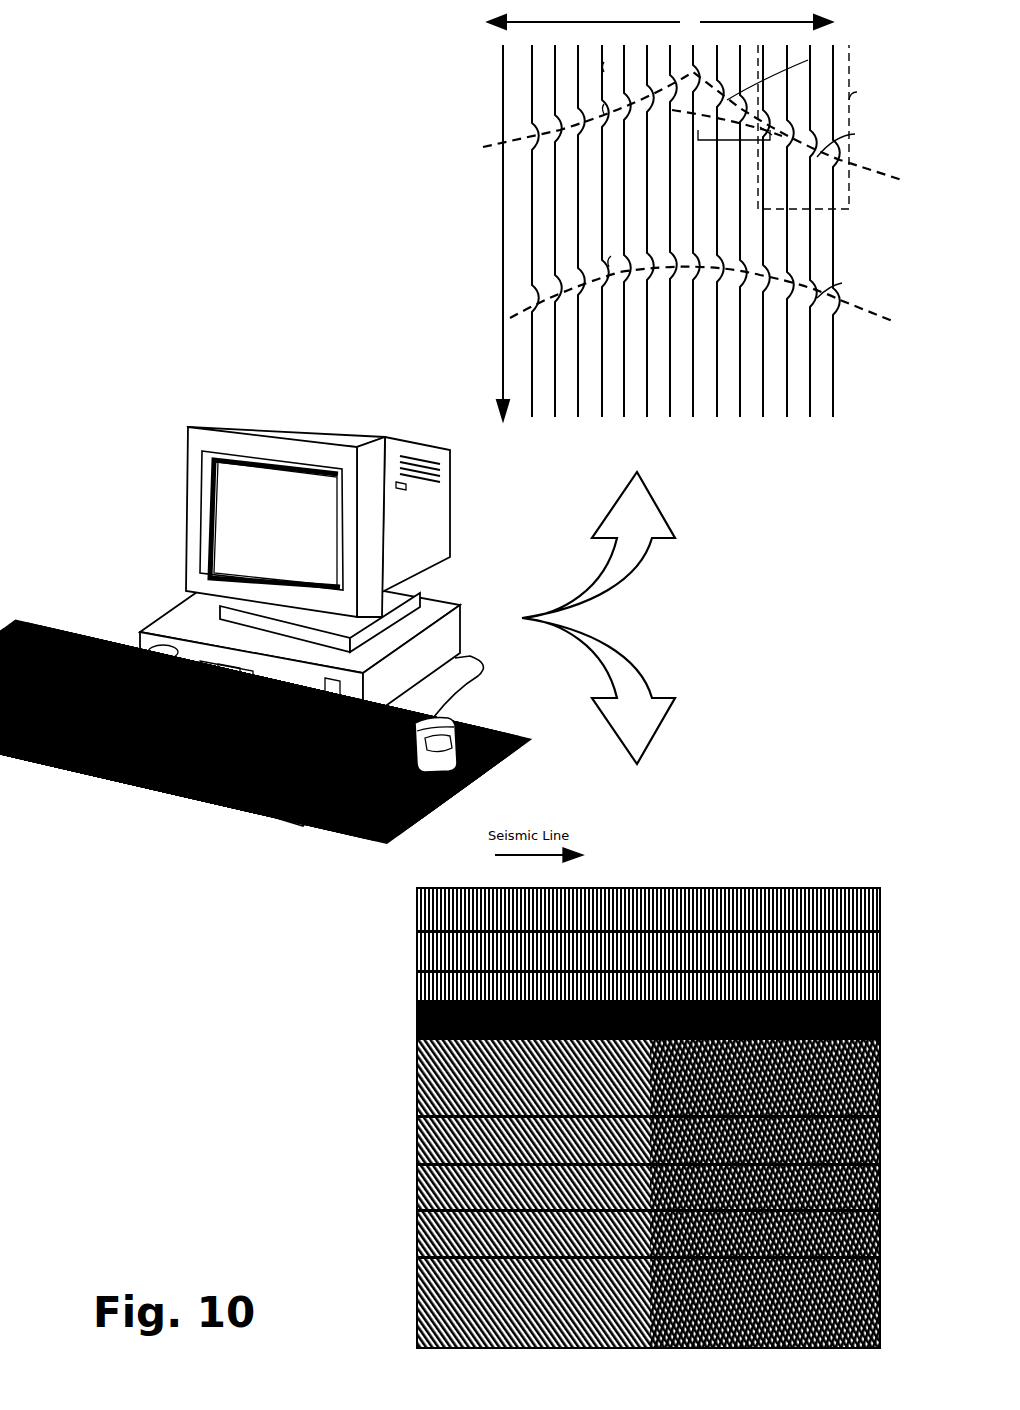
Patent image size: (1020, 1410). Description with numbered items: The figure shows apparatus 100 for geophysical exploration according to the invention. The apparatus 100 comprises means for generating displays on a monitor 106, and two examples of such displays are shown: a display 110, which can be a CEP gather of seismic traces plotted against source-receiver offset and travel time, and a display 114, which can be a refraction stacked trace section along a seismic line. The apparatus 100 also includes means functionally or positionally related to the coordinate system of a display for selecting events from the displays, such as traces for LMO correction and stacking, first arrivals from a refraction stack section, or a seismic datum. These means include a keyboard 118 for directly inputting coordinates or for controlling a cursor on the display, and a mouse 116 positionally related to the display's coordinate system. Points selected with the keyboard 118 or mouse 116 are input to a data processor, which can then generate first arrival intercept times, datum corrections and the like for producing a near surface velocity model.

The apparatus for geophysical exploration 100 is at (149, 545).
The monitor 106 is at (263, 423).
The display 110 is at (486, 70).
The display 114 is at (378, 1107).
The mouse 116 is at (447, 773).
The keyboard 118 is at (143, 770).